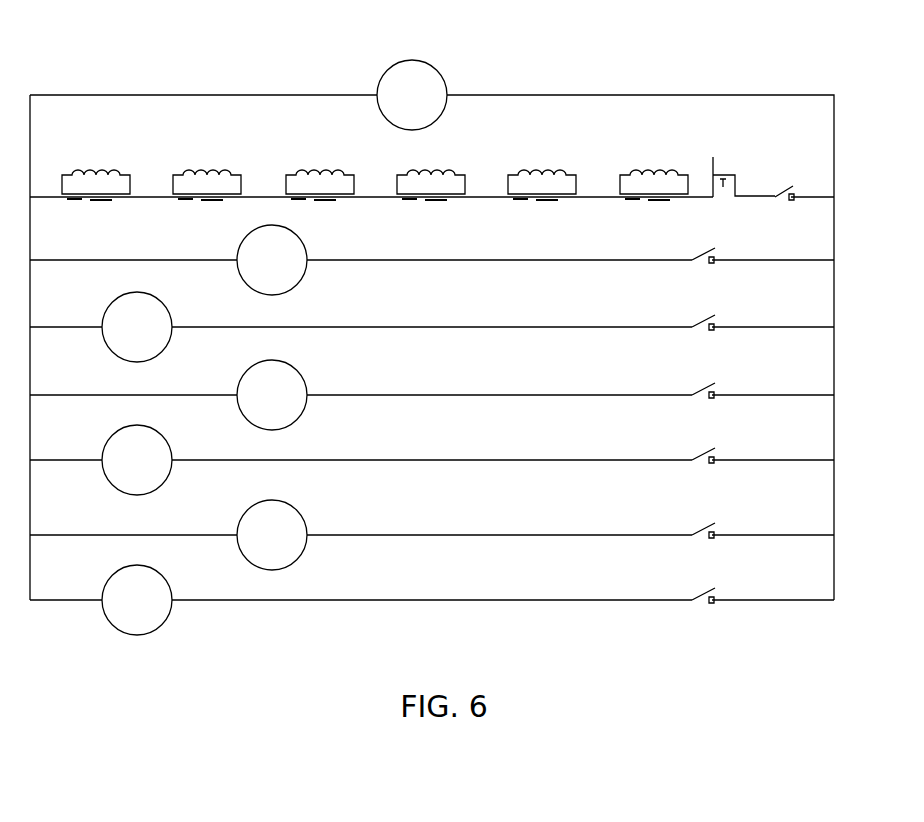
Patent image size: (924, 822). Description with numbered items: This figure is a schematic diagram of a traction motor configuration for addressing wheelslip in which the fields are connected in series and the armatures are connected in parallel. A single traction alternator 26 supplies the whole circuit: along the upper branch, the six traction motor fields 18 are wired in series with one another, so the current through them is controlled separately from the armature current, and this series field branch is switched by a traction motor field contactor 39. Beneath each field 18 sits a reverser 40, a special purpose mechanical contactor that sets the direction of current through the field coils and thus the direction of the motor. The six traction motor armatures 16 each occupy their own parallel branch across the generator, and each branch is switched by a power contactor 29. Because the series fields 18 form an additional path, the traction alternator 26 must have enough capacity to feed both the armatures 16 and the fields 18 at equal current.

The traction alternator 26 is at (430, 80).
The field 18 is at (640, 173).
The reverser 40 is at (647, 198).
The armature 16 is at (182, 646).
The power contactor 29 is at (860, 549).
The traction motor field contactor 39 is at (783, 184).